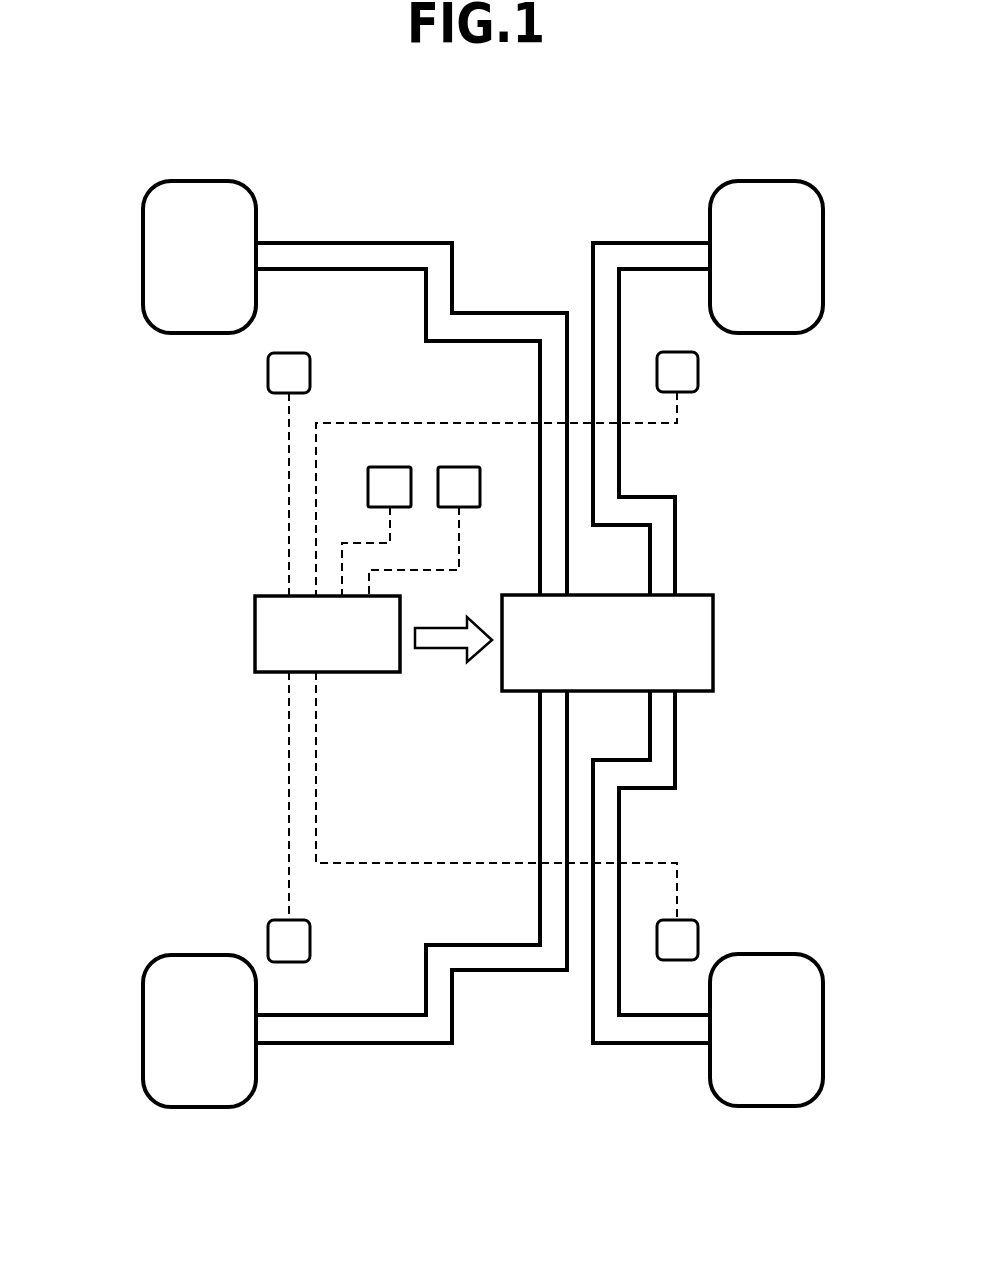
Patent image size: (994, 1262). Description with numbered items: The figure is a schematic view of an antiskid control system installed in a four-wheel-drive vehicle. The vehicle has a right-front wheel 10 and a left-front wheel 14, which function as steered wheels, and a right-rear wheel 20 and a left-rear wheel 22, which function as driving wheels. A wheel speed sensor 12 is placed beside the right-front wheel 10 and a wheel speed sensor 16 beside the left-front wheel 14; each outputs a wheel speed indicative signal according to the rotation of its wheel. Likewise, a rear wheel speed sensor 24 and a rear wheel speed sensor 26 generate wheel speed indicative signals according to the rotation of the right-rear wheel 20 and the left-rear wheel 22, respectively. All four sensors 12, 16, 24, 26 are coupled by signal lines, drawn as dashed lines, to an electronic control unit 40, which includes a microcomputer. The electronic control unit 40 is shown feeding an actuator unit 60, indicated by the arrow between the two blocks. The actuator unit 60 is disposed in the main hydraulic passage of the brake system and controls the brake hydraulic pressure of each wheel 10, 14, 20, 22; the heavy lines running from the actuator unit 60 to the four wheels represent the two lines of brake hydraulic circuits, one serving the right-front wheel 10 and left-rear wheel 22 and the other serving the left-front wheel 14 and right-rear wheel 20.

The right-front wheel 10 is at (805, 266).
The wheel speed sensor 12 is at (698, 372).
The left-front wheel 14 is at (156, 269).
The wheel speed sensor 16 is at (268, 373).
The right-rear wheel 20 is at (805, 1042).
The left-rear wheel 22 is at (156, 1042).
The rear wheel speed sensor 24 is at (698, 933).
The rear wheel speed sensor 26 is at (268, 933).
The electronic control unit 40 is at (255, 636).
The actuator unit 60 is at (713, 627).